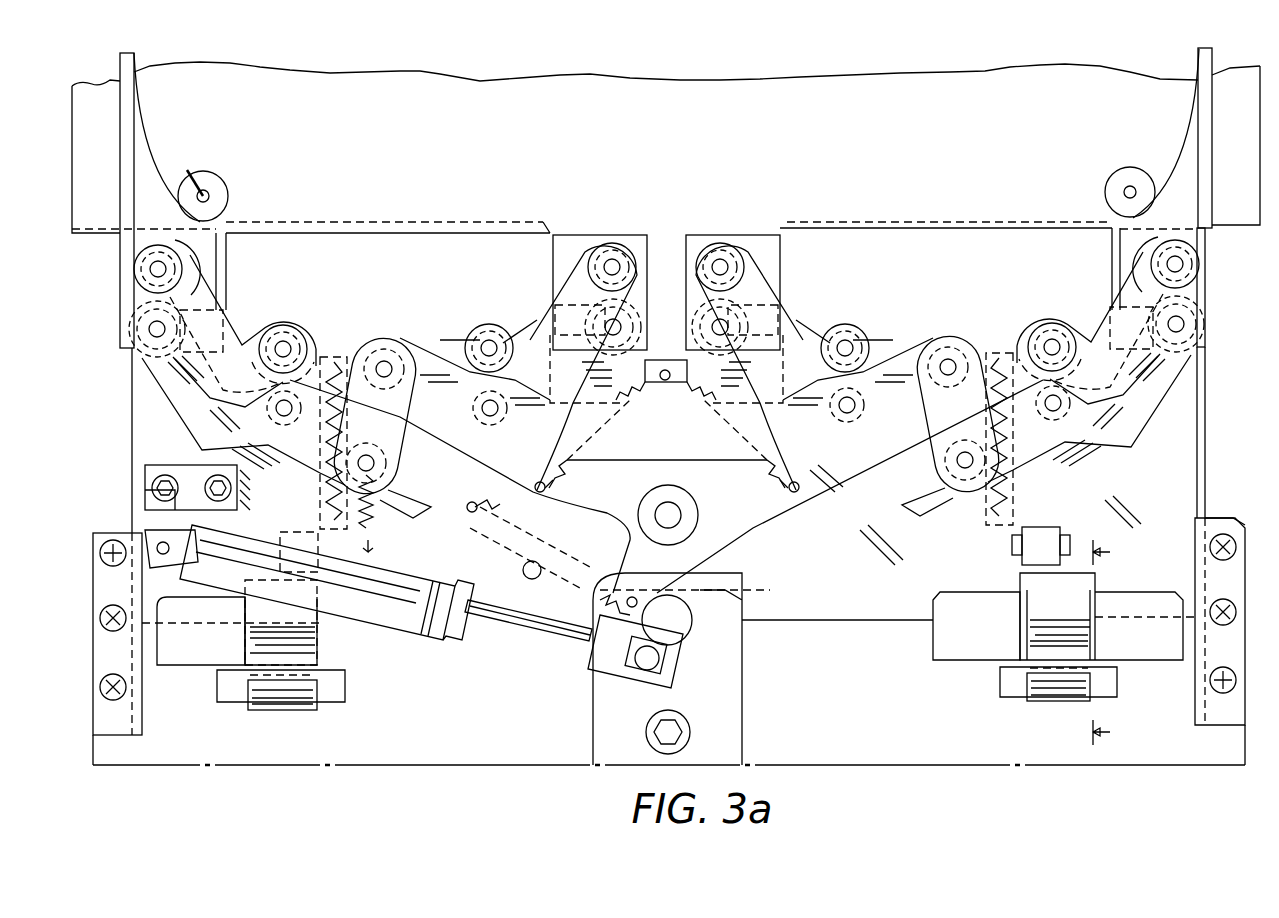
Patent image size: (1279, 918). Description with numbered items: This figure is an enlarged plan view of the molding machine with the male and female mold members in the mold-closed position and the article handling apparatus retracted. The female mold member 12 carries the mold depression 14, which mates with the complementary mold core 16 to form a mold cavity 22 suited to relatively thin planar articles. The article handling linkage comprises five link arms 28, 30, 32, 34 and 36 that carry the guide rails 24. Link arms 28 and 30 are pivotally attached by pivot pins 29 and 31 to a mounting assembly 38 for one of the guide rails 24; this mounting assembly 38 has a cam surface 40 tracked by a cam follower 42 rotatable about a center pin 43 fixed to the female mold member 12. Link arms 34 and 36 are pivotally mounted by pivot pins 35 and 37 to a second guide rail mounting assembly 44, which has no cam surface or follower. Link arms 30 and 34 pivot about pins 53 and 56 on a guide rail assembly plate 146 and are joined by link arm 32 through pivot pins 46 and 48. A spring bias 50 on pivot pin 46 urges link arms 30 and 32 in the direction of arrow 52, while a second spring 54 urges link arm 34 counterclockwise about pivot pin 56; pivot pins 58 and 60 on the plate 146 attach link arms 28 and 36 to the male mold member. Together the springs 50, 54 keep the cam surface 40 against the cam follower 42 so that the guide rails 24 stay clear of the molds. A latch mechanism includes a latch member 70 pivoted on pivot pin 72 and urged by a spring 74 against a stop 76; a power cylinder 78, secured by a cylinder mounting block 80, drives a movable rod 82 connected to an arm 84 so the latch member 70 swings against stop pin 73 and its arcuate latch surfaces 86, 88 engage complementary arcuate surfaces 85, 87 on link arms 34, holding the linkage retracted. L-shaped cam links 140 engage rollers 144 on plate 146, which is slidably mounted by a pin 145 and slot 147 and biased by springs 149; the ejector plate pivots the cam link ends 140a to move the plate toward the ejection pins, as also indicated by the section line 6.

The section line 6 is at (1110, 642).
The female mold member 12 is at (668, 124).
The mold depression 14 is at (823, 224).
The mold core 16 is at (376, 280).
The mold cavity 22 is at (947, 224).
The guide rails 24 is at (222, 310).
The link arm 28 is at (238, 336).
The pivot pin 29 is at (150, 269).
The link arm 30 is at (225, 438).
The pivot pin 31 is at (150, 329).
The link arm 32 is at (398, 448).
The link arm 34 is at (477, 468).
The pivot pin 35 is at (716, 327).
The link arm 36 is at (520, 340).
The pivot pin 37 is at (718, 262).
The mounting assembly 38 is at (133, 298).
The cam surface 40 is at (142, 104).
The cam follower 42 is at (210, 172).
The center pin 43 is at (183, 168).
The guide rail mounting assembly 44 is at (575, 250).
The pivot pin 46 is at (358, 468).
The pivot pin 48 is at (384, 360).
The spring bias 50 is at (372, 524).
The arrow 52 is at (380, 552).
The pin 53 is at (283, 418).
The spring 54 is at (630, 432).
The pivot pin 56 is at (483, 410).
The pivot pin 58 is at (287, 345).
The pivot pin 60 is at (485, 346).
The latch member 70 is at (740, 528).
The pivot pin 72 is at (672, 512).
The stop pin 73 is at (692, 620).
The spring 74 is at (560, 548).
The stop 76 is at (522, 562).
The power cylinder 78 is at (424, 645).
The cylinder mounting block 80 is at (142, 528).
The movable rod 82 is at (535, 645).
The arm 84 is at (598, 612).
The arcuate surface 85 is at (555, 448).
The arcuate latch surface 86 is at (552, 493).
The arcuate surface 87 is at (790, 442).
The arcuate latch surface 88 is at (795, 497).
The cam link 140 is at (255, 610).
The cam link end 140a is at (262, 705).
The roller 144 is at (262, 646).
The pin 145 is at (1003, 352).
The guide rail assembly plate 146 is at (832, 612).
The slot 147 is at (1020, 495).
The spring 149 is at (990, 525).